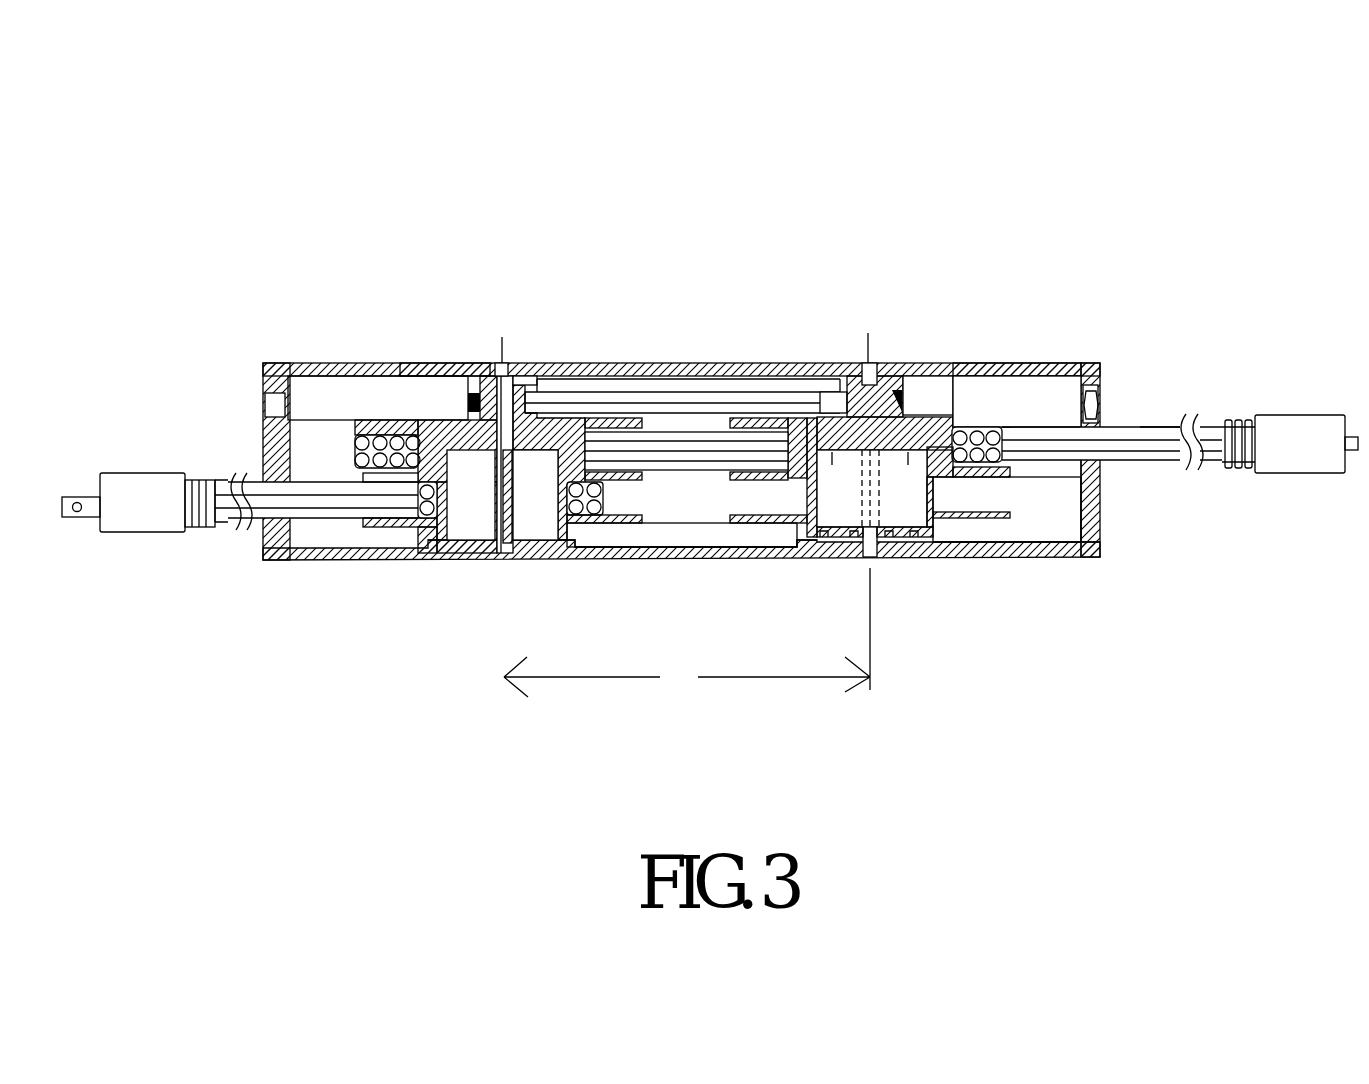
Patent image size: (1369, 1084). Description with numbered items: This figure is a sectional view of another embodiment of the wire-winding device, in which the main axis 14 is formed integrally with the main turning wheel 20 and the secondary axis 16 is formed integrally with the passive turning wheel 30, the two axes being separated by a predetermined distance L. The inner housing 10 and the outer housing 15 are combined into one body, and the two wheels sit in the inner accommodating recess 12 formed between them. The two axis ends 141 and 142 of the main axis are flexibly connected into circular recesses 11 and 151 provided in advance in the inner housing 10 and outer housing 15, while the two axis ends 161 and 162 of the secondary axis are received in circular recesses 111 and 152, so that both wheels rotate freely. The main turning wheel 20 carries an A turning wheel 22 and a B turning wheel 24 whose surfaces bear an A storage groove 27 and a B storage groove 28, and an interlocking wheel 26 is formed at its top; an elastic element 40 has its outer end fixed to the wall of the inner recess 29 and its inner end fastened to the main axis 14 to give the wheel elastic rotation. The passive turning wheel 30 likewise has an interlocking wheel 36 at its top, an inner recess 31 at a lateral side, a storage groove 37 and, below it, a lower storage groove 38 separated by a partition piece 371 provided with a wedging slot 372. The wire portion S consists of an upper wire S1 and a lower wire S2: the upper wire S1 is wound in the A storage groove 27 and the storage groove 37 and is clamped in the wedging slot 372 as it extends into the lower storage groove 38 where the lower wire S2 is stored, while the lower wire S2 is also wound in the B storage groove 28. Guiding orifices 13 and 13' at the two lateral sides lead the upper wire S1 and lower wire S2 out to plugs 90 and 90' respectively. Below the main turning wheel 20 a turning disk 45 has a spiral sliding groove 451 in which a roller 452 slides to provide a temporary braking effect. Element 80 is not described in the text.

The inner housing 10 is at (388, 475).
The circular recess 11 is at (880, 557).
The circular recess 111 is at (505, 563).
The inner accommodating recess 12 is at (675, 523).
The guiding orifice 13 is at (1112, 376).
The guiding orifice 13' is at (291, 446).
The main axis 14 is at (925, 364).
The axis end 141 is at (875, 364).
The axis end 142 is at (937, 493).
The outer housing 15 is at (437, 364).
The circular recess 151 is at (862, 363).
The circular recess 152 is at (497, 367).
The secondary axis 16 is at (496, 563).
The axis end 161 is at (507, 367).
The axis end 162 is at (501, 563).
The main turning wheel 20 is at (988, 378).
The A turning wheel 22 is at (938, 378).
The B turning wheel 24 is at (950, 493).
The interlocking wheel 26 is at (852, 380).
The A storage groove 27 is at (808, 382).
The B storage groove 28 is at (1070, 552).
The inner recess 29 is at (1023, 364).
The passive turning wheel 30 is at (543, 407).
The inner recess 31 is at (538, 540).
The interlocking wheel 36 is at (533, 440).
The storage groove 37 is at (355, 432).
The partition piece 371 is at (408, 481).
The wedging slot 372 is at (418, 486).
The lower storage groove 38 is at (612, 500).
The elastic element 40 is at (928, 527).
The turning disk 45 is at (837, 540).
The spiral sliding groove 451 is at (862, 552).
The roller 452 is at (812, 537).
The plate 80 is at (673, 443).
The plug 90 is at (1295, 376).
The plug 90' is at (138, 568).
The wire portion S is at (1159, 429).
The upper wire S1 is at (370, 432).
The lower wire S2 is at (408, 508).
The distance L is at (687, 632).